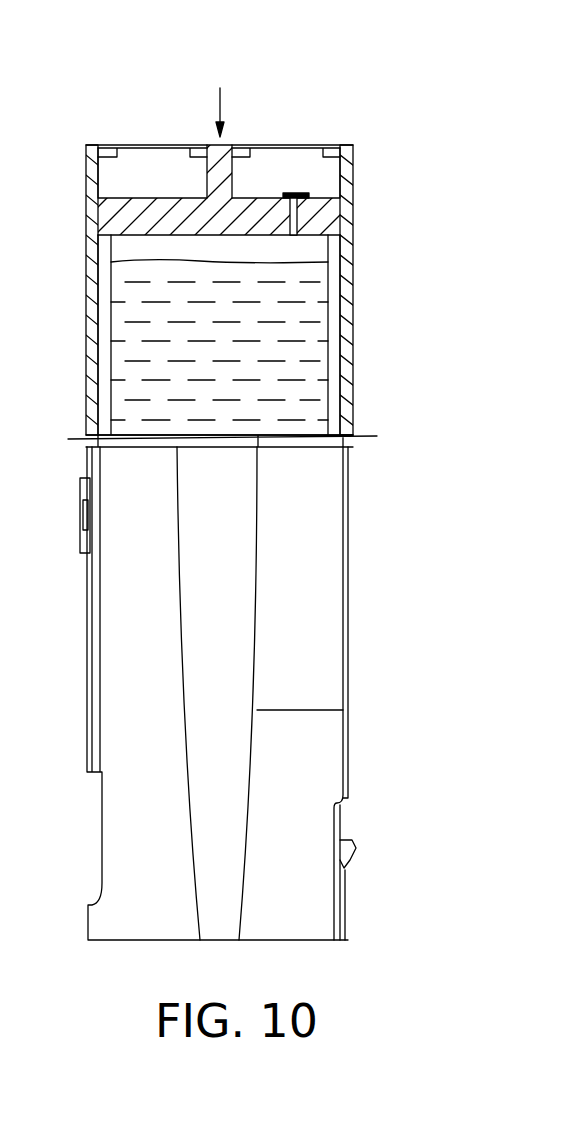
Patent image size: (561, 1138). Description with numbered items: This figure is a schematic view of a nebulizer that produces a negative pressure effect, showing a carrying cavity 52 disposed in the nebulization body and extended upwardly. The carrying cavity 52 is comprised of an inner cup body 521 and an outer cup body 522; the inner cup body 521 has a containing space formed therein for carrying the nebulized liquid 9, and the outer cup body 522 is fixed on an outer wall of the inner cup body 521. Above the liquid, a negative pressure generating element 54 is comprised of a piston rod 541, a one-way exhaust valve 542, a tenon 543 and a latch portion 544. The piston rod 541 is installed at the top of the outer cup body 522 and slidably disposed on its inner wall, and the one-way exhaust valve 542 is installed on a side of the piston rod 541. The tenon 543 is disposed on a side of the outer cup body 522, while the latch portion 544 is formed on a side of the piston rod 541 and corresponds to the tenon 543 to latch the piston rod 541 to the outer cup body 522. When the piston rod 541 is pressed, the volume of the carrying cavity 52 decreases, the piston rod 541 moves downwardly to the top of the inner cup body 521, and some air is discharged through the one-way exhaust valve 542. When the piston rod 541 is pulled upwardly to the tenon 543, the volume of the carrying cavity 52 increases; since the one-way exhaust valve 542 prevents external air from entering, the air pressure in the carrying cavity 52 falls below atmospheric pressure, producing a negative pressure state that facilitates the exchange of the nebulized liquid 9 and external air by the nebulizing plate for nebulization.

The nebulized liquid 9 is at (305, 378).
The carrying cavity 52 is at (170, 68).
The inner cup body 521 is at (104, 282).
The outer cup body 522 is at (92, 172).
The negative pressure generating element 54 is at (420, 107).
The piston rod 541 is at (322, 163).
The one-way exhaust valve 542 is at (296, 213).
The tenon 543 is at (333, 147).
The latch portion 544 is at (335, 225).